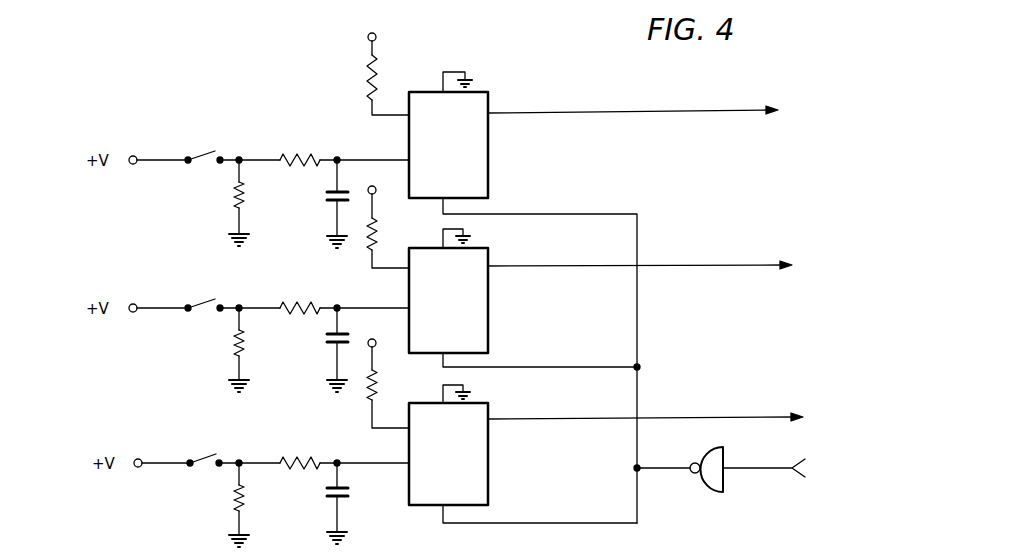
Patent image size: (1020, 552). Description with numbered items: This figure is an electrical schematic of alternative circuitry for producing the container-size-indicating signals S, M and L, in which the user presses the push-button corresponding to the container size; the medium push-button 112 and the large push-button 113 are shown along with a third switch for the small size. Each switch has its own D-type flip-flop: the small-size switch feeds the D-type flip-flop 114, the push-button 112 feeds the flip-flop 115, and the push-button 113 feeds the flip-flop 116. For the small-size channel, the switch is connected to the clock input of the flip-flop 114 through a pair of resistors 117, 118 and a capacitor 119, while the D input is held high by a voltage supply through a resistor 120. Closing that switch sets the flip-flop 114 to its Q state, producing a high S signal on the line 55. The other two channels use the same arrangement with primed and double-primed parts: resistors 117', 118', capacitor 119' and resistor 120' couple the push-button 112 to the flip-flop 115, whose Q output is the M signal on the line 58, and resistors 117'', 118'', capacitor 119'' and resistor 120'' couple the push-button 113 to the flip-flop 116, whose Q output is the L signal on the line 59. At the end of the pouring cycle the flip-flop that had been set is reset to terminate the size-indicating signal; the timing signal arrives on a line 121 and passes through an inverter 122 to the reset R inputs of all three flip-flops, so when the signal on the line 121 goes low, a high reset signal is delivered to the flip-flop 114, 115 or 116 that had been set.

The line 55 is at (705, 417).
The M output line 58 is at (684, 268).
The L output line 59 is at (687, 112).
The push-button 112 is at (198, 318).
The push-button 113 is at (200, 170).
The D-type flip-flop 114 is at (488, 465).
The D-type flip-flop 115 is at (488, 310).
The D-type flip-flop 116 is at (488, 162).
The resistor 117 is at (212, 505).
The resistor 117' is at (197, 350).
The resistor 117'' is at (199, 203).
The resistor 118 is at (297, 446).
The resistor 118' is at (291, 290).
The resistor 118'' is at (300, 148).
The capacitor 119 is at (308, 503).
The capacitor 119' is at (311, 350).
The capacitor 119'' is at (312, 204).
The resistor 120 is at (361, 381).
The resistor 120' is at (360, 234).
The resistor 120'' is at (348, 72).
The line 121 is at (790, 472).
The inverter 122 is at (710, 480).